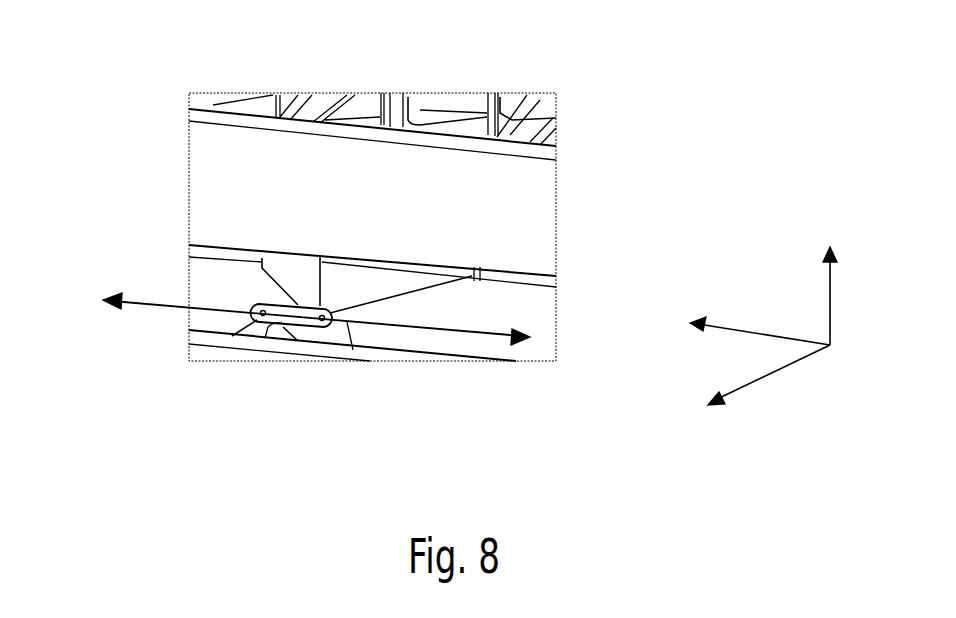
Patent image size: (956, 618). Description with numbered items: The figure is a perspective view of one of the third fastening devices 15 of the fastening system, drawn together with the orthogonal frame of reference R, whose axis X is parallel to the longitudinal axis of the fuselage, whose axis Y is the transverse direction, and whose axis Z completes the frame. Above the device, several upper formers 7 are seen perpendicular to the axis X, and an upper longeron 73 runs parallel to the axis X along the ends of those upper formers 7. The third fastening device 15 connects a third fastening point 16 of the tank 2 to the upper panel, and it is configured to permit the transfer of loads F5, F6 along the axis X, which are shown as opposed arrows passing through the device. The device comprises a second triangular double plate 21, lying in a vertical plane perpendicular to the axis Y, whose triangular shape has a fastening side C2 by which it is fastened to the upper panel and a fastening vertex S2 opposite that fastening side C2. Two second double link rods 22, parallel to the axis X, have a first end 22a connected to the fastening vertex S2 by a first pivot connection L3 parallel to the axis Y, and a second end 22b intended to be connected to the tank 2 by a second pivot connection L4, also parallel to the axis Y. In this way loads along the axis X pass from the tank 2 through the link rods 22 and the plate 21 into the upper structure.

The tank 2 is at (213, 346).
The upper former 7 is at (413, 110).
The third fastening device 15 is at (176, 281).
The third fastening point 16 is at (266, 340).
The second triangular double plate 21 is at (400, 285).
The second double link rod 22 is at (300, 303).
The first end 22a is at (320, 326).
The second end 22b is at (243, 336).
The upper longeron 73 is at (483, 205).
The fastening side C2 is at (320, 255).
The first pivot connection L3 is at (330, 313).
The second pivot connection L4 is at (258, 306).
The fastening vertex S2 is at (353, 345).
The load F5 is at (163, 308).
The load F6 is at (450, 330).
The axis X is at (756, 348).
The axis Y is at (769, 396).
The axis Z is at (844, 292).
The orthogonal frame of reference R is at (836, 352).